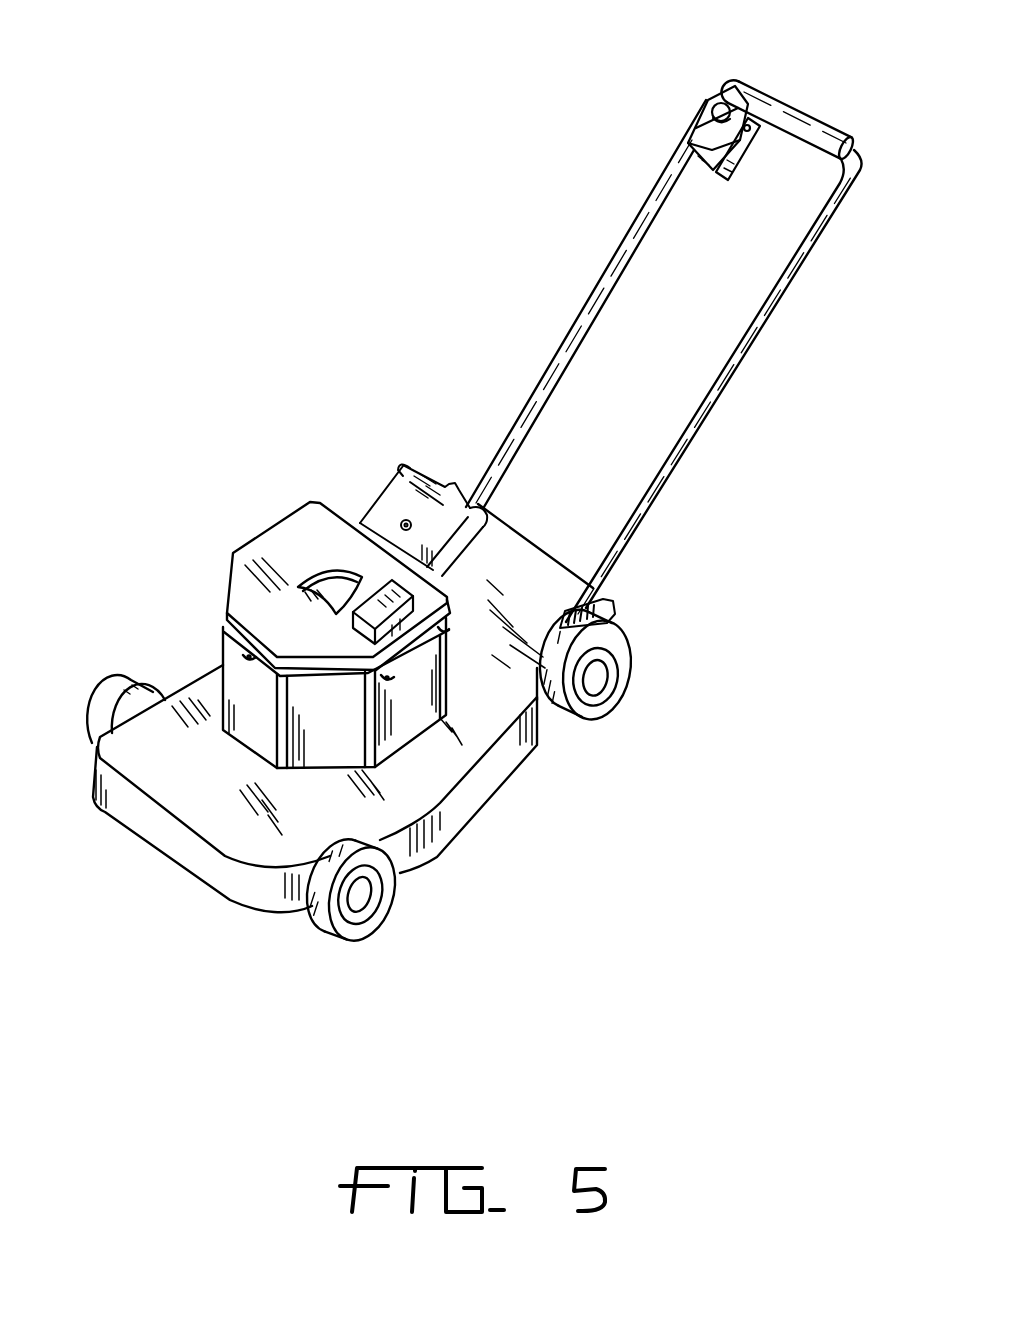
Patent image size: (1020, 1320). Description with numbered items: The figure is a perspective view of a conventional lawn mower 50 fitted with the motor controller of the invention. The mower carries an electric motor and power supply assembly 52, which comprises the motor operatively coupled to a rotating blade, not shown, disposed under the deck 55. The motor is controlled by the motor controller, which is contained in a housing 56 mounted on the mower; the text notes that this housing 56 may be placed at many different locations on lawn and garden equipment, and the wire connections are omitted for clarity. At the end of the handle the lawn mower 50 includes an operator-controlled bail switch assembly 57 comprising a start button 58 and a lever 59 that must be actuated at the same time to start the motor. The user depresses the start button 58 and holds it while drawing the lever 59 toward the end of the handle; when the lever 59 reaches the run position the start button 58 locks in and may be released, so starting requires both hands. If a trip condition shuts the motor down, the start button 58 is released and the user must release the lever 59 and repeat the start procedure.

The lawn mower 50 is at (318, 372).
The electric motor and power supply assembly 52 is at (214, 598).
The deck 55 is at (237, 838).
The housing 56 is at (370, 582).
The operator-controlled bail switch assembly 57 is at (687, 127).
The start button 58 is at (720, 78).
The lever 59 is at (750, 160).